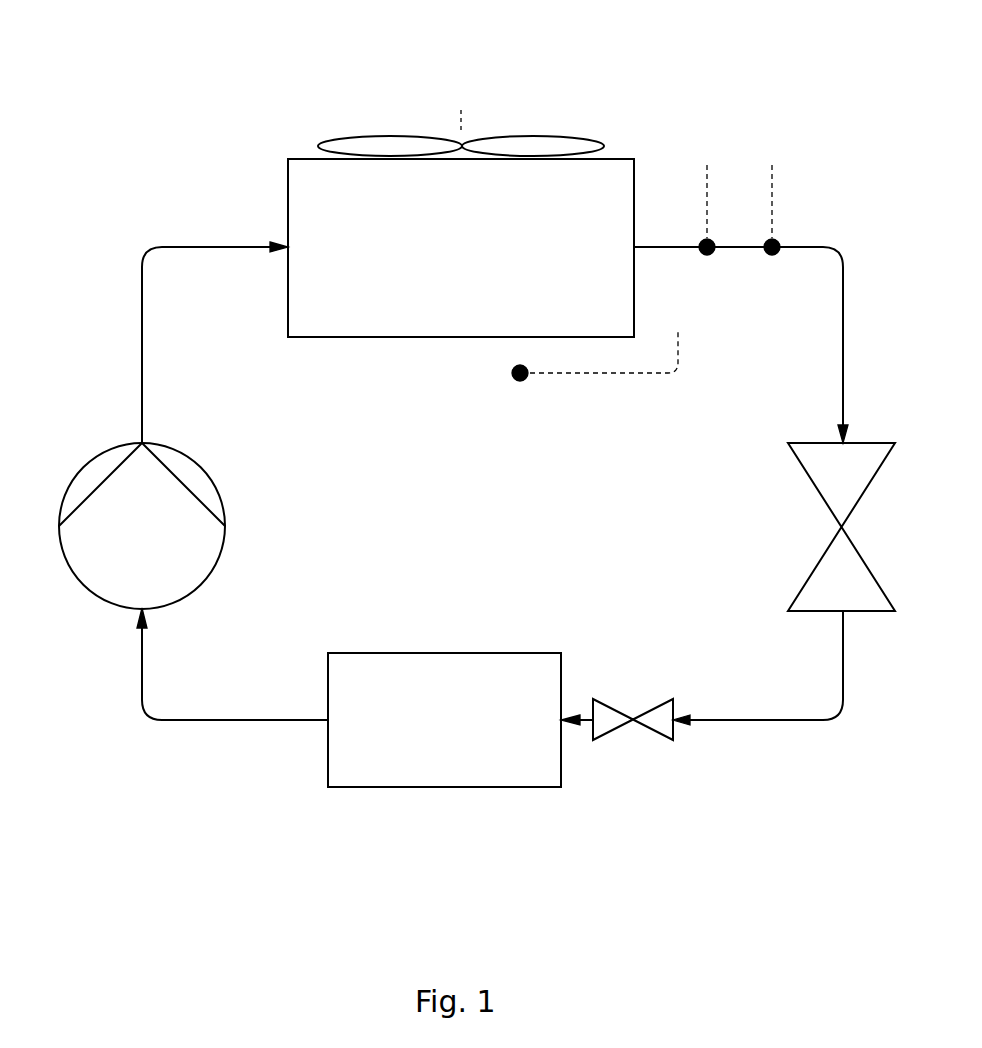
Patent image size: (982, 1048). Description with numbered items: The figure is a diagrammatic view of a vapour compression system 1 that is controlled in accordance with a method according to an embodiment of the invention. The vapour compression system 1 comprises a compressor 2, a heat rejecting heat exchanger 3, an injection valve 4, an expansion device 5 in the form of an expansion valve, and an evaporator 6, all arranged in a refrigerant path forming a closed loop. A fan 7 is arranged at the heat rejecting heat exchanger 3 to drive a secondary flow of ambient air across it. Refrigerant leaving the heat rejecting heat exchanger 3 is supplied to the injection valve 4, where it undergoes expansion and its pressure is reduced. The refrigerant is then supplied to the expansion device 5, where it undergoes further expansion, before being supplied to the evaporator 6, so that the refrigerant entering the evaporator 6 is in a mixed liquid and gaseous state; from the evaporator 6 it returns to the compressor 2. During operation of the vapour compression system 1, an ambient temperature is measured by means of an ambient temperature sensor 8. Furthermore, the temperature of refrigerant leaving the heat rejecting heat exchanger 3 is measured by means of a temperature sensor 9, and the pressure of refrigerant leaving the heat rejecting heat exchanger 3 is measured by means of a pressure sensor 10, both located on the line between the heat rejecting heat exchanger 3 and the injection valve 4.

The vapour compression system 1 is at (165, 57).
The compressor 2 is at (95, 553).
The heat rejecting heat exchanger 3 is at (308, 190).
The injection valve 4 is at (834, 463).
The expansion device 5 is at (652, 717).
The evaporator 6 is at (380, 757).
The fan 7 is at (525, 143).
The ambient temperature sensor 8 is at (512, 382).
The temperature sensor 9 is at (704, 240).
The pressure sensor 10 is at (778, 240).